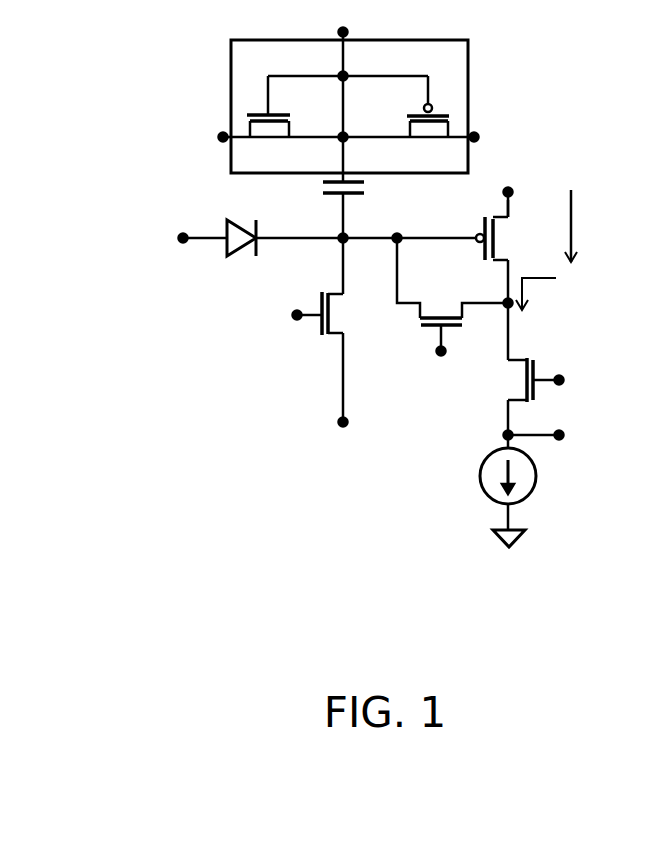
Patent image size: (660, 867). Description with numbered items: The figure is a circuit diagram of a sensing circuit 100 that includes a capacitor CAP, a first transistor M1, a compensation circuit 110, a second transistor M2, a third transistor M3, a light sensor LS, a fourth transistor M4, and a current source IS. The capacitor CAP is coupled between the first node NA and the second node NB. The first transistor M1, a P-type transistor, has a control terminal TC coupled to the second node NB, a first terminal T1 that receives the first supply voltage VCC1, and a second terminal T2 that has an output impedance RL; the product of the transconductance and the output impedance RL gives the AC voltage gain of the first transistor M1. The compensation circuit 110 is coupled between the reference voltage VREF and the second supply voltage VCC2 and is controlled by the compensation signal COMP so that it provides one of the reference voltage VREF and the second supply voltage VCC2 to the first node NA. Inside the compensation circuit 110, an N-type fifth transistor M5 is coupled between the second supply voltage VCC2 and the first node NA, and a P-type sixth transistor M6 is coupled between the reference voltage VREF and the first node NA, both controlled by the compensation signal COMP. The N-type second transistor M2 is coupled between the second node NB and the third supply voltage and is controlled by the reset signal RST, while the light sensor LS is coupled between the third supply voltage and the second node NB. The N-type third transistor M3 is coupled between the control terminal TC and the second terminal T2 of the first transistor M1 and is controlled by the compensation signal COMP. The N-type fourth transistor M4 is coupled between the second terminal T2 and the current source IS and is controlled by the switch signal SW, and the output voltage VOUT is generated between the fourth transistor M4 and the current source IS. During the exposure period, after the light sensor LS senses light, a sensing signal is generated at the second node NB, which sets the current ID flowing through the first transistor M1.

The sensing circuit 100 is at (173, 537).
The compensation circuit 110 is at (433, 71).
The first transistor M1 is at (504, 238).
The second transistor M2 is at (346, 316).
The third transistor M3 is at (443, 300).
The fourth transistor M4 is at (515, 384).
The fifth transistor M5 is at (268, 130).
The sixth transistor M6 is at (428, 130).
The capacitor CAP is at (368, 186).
The light sensor LS is at (245, 220).
The current source IS is at (537, 476).
The first node NA is at (344, 131).
The second node NB is at (340, 246).
The control terminal TC is at (467, 226).
The first terminal T1 is at (524, 208).
The second terminal T2 is at (521, 282).
The current ID is at (586, 226).
The output impedance RL is at (548, 292).
The compensation signal COMP is at (342, 71).
The first supply voltage VCC1 is at (510, 179).
The second supply voltage VCC2 is at (197, 137).
The reference voltage VREF is at (499, 137).
The reset signal RST is at (278, 315).
The switch signal SW is at (576, 380).
The output voltage VOUT is at (562, 435).